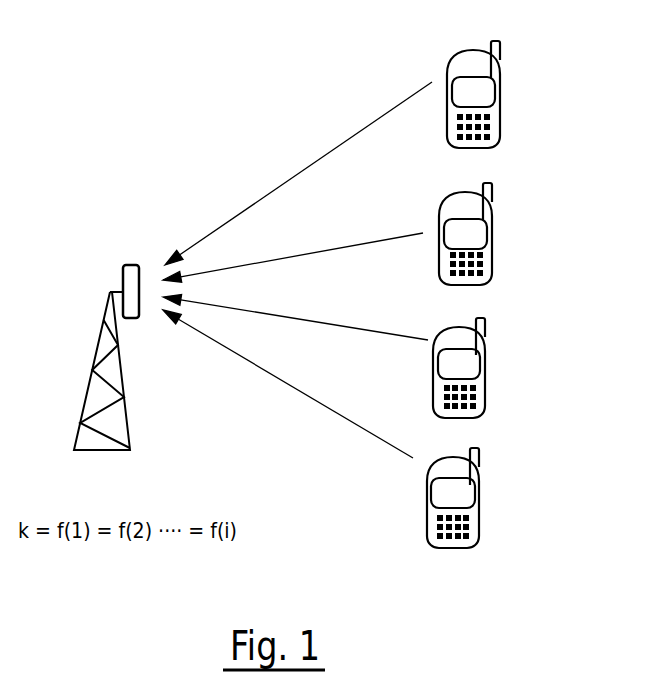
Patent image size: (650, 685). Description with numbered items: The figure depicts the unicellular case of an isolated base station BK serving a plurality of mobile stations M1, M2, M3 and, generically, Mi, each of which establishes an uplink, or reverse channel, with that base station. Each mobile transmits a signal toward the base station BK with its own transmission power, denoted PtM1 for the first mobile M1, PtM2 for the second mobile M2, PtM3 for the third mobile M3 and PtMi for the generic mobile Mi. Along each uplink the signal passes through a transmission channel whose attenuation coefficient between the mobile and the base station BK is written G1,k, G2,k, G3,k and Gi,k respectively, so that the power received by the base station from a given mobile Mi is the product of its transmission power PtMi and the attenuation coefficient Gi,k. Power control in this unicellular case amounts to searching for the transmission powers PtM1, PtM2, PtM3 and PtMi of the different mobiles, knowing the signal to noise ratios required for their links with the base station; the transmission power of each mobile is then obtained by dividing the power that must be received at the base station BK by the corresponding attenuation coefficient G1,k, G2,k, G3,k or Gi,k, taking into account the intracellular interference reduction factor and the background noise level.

The base station BK is at (106, 383).
The mobile station M1 is at (499, 75).
The mobile station M2 is at (490, 220).
The mobile station M3 is at (484, 354).
The mobile station Mi is at (474, 484).
The transmission power PtM1 is at (477, 75).
The transmission power PtM2 is at (465, 220).
The transmission power PtM3 is at (459, 354).
The transmission power PtMi is at (453, 484).
The attenuation coefficient G1,k is at (298, 173).
The attenuation coefficient G2,k is at (293, 245).
The attenuation coefficient G3,k is at (295, 312).
The attenuation coefficient Gi,k is at (288, 384).